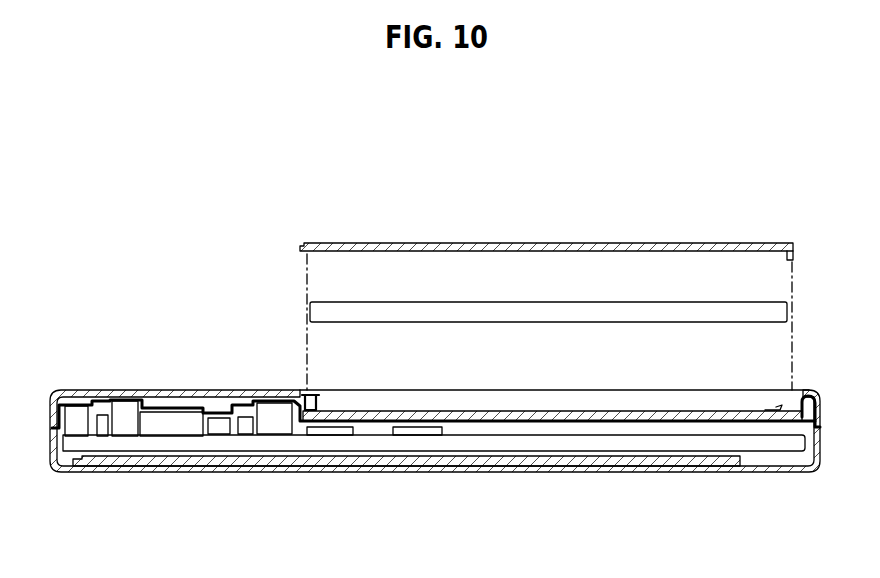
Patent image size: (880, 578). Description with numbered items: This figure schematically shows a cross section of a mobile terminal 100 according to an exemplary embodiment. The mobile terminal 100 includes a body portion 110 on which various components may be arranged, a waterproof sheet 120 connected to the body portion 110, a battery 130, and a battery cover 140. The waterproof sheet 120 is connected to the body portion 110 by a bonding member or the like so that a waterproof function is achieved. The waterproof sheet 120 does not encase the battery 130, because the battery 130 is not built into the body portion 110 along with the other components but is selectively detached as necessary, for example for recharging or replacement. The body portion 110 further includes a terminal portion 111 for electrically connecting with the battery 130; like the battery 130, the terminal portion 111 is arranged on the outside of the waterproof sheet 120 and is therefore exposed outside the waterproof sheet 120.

The mobile terminal 100 is at (476, 147).
The body portion 110 is at (763, 466).
The terminal portion 111 is at (317, 393).
The waterproof sheet 120 is at (172, 406).
The battery 130 is at (310, 308).
The battery cover 140 is at (518, 246).